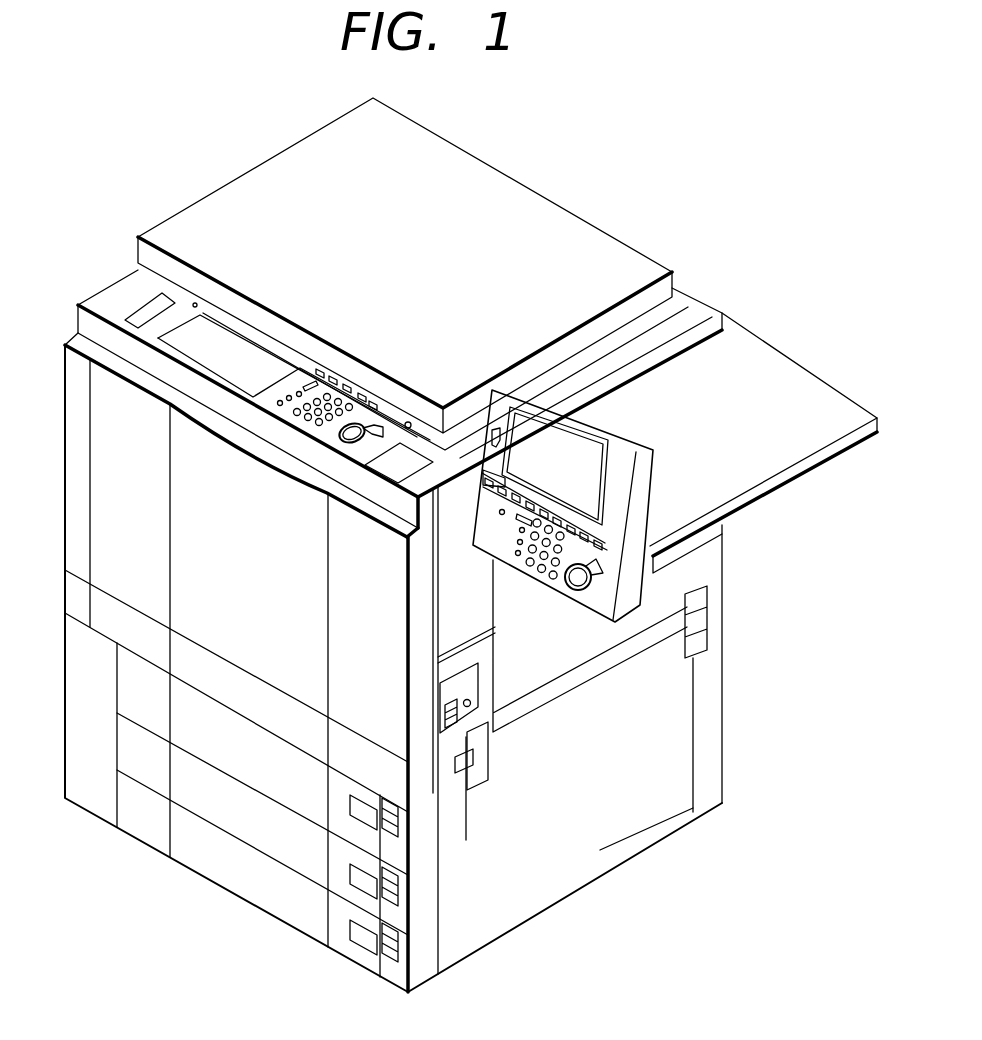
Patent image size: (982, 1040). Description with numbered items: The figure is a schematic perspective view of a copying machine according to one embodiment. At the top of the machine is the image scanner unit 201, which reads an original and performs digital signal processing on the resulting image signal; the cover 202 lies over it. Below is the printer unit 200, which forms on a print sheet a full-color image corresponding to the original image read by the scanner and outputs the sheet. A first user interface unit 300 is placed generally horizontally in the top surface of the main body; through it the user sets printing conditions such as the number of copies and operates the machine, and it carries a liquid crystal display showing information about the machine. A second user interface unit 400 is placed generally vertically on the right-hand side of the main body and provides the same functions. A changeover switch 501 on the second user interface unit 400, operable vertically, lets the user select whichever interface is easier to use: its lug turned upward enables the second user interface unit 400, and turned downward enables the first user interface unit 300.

The printer unit 200 is at (713, 566).
The image scanner unit 201 is at (685, 300).
The platen cover / original pressing plate 202 is at (527, 213).
The first user interface unit 300 is at (117, 292).
The second user interface unit 400 is at (628, 601).
The changeover switch 501 is at (495, 428).